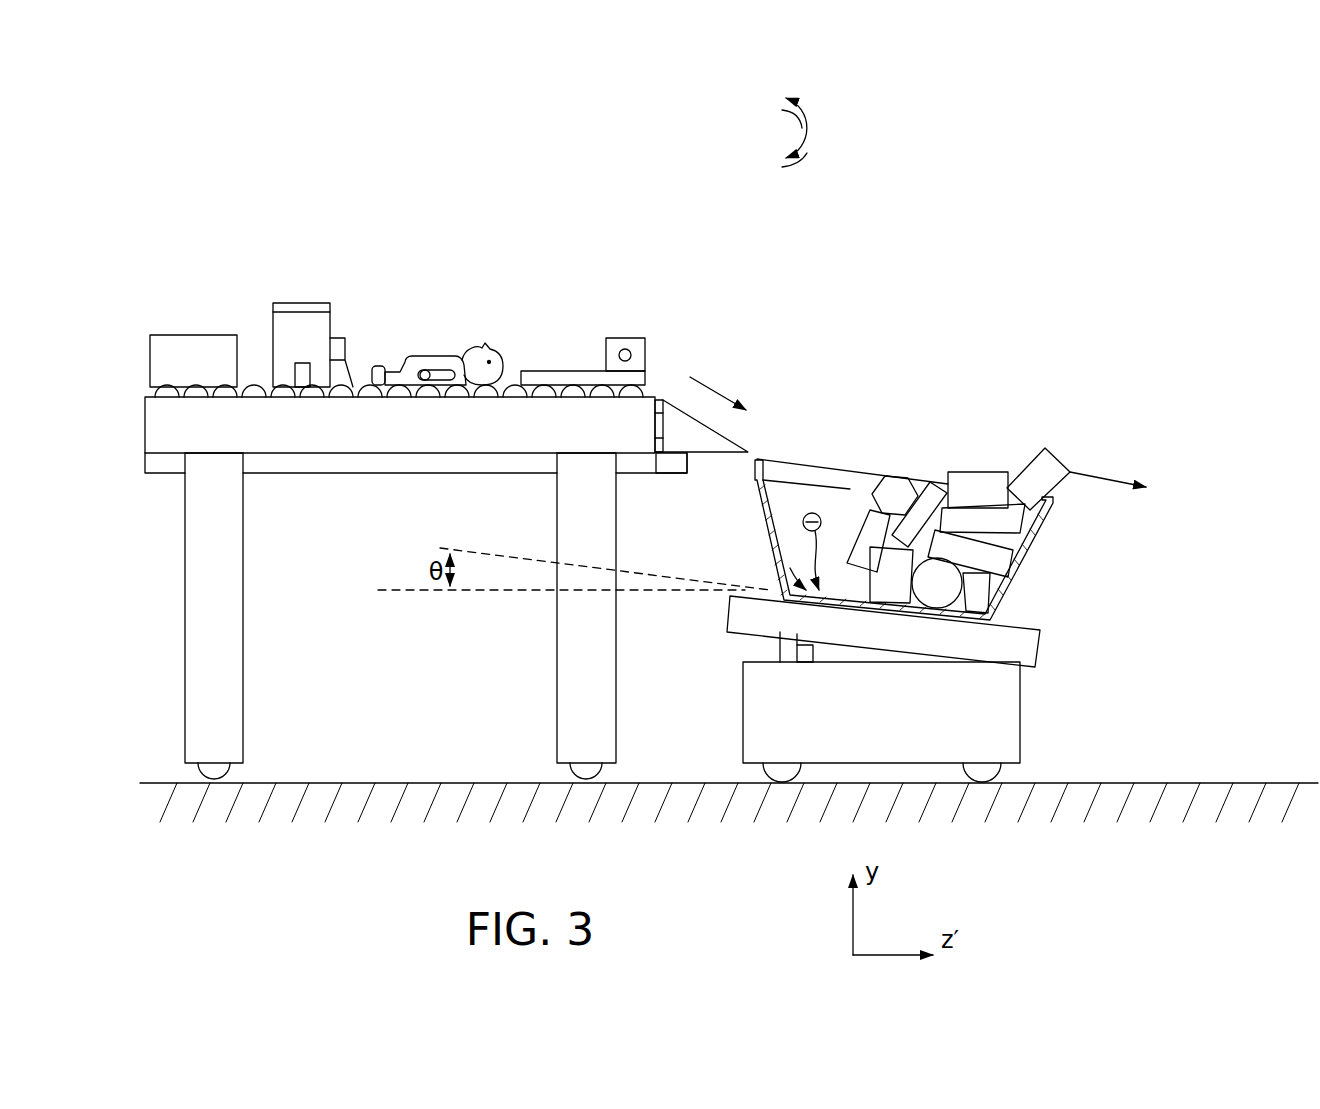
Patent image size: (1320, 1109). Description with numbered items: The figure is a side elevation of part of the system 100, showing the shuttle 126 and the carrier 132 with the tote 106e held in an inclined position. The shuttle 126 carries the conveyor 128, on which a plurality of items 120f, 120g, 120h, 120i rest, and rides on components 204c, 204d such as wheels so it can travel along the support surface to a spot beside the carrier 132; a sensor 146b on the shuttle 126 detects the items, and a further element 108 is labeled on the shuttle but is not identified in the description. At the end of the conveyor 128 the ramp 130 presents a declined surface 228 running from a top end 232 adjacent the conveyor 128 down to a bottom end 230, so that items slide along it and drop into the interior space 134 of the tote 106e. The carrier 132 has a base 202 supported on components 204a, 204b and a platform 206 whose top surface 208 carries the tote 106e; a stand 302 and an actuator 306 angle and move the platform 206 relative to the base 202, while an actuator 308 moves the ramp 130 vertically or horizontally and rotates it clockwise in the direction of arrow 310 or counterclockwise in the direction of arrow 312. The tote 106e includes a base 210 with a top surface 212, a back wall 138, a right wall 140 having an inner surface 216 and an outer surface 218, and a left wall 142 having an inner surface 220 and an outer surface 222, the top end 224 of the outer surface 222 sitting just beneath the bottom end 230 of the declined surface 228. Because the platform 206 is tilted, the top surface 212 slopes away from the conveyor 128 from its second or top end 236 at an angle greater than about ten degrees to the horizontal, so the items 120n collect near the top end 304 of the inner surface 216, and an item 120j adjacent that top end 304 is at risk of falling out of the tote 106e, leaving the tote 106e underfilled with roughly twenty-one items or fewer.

The system 100 is at (1022, 243).
The tote 106e is at (1098, 463).
The conveyor 108 is at (515, 392).
The item 120f is at (571, 371).
The item 120g is at (433, 356).
The item 120h is at (289, 303).
The item 120i is at (183, 335).
The item 120j is at (985, 472).
The items 120n is at (952, 472).
The shuttle 126 is at (257, 370).
The conveyor 128 is at (145, 420).
The ramp 130 is at (702, 456).
The carrier 132 is at (944, 664).
The interior space 134 is at (828, 457).
The back wall 138 is at (914, 460).
The right wall 140 is at (1022, 566).
The left wall 142 is at (767, 550).
The sensor 146b is at (630, 338).
The base 202 is at (1020, 735).
The component 204a is at (1000, 775).
The component 204b is at (782, 783).
The component 204c is at (575, 766).
The component 204d is at (218, 776).
The platform 206 is at (1042, 650).
The top surface 208 is at (1048, 620).
The base 210 is at (866, 460).
The top surface 212 is at (858, 445).
The inner surface 216 is at (1032, 510).
The outer surface 218 is at (1000, 585).
The inner surface 220 is at (765, 488).
The outer surface 222 is at (782, 598).
The top end 224 is at (742, 468).
The declined surface 228 is at (672, 400).
The bottom end 230 is at (754, 440).
The top end 232 is at (658, 384).
The second end 236 is at (748, 665).
The stand 302 is at (780, 640).
The top end 304 is at (1048, 480).
The actuator 306 is at (800, 662).
The actuator 308 is at (670, 468).
The arrow 310 is at (800, 127).
The arrow 312 is at (817, 130).